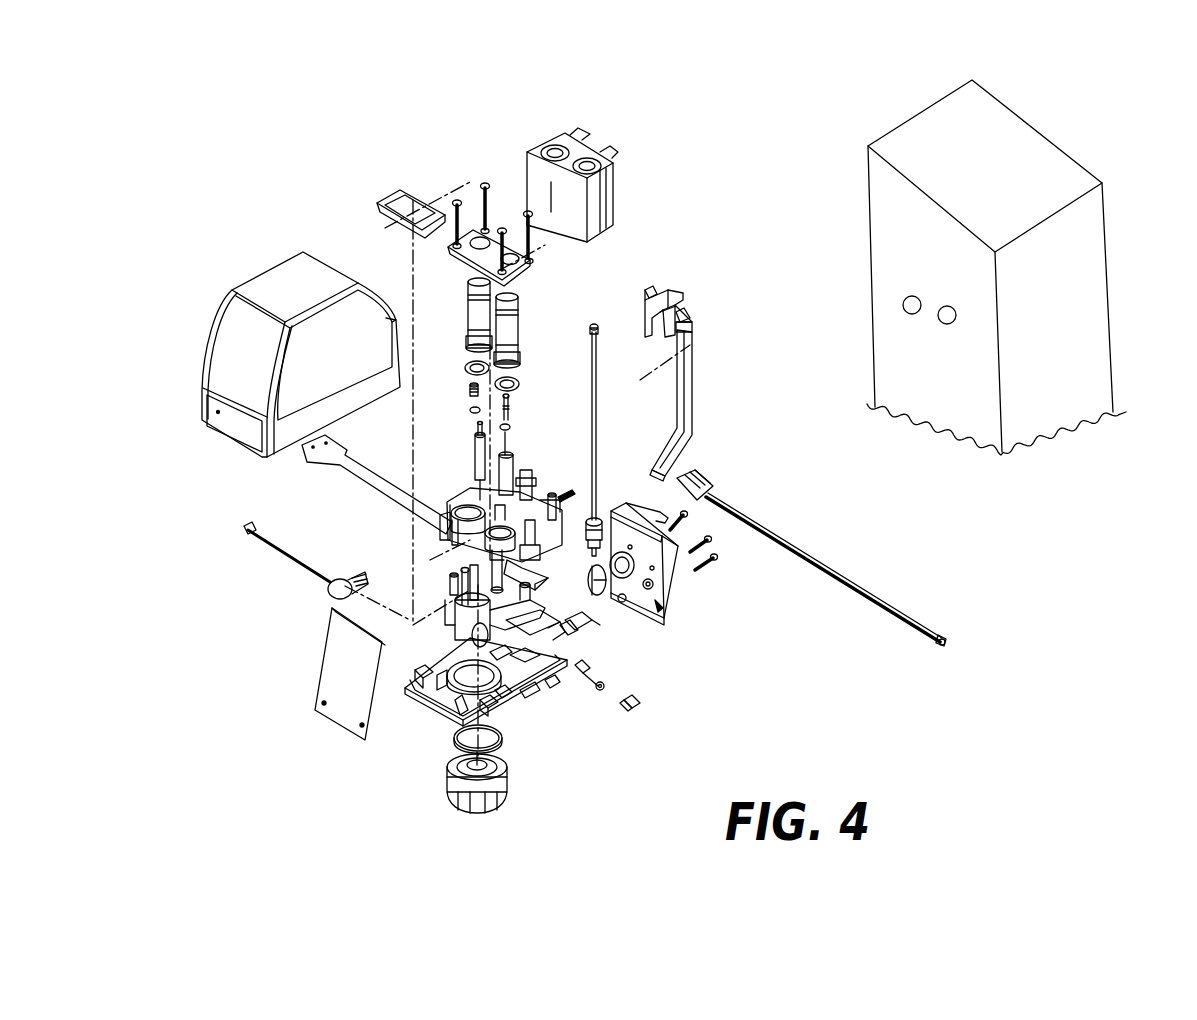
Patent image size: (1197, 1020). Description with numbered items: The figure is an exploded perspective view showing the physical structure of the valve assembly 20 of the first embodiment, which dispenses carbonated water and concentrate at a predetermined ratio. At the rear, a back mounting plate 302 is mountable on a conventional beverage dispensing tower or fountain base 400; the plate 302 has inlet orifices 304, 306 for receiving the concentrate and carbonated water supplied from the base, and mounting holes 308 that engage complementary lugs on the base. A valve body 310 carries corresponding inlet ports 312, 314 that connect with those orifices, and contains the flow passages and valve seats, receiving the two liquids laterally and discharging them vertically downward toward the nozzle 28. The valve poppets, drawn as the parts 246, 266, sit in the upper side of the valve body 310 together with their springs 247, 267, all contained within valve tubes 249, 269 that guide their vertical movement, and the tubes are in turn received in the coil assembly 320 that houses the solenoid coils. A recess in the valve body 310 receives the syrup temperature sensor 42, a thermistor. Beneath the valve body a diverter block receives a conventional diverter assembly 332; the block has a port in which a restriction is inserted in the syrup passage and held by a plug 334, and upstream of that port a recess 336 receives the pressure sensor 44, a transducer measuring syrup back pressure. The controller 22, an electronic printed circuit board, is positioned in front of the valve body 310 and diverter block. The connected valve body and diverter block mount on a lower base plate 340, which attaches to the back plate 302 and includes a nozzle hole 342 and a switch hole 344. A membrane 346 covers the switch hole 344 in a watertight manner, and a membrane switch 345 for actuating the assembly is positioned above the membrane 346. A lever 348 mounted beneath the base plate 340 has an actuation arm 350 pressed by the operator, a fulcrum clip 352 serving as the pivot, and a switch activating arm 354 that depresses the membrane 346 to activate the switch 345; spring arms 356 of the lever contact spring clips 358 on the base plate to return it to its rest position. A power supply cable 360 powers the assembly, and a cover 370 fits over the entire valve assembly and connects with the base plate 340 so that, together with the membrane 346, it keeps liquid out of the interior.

The valve assembly 20 is at (751, 249).
The controller 22 is at (318, 662).
The nozzle 28 is at (448, 779).
The syrup temperature sensor 42 is at (591, 515).
The pressure sensor 44 is at (328, 589).
The piston 246 is at (470, 458).
The spring 247 is at (467, 397).
The valve tube 249 is at (466, 322).
The valve stem 266 is at (515, 450).
The spring 267 is at (511, 404).
The valve tube 269 is at (521, 324).
The back mounting plate 302 is at (690, 590).
The inlet orifice 304 is at (666, 609).
The inlet orifice 306 is at (613, 505).
The mounting holes 308 is at (652, 523).
The valve body 310 is at (458, 506).
The inlet port 312 is at (531, 470).
The inlet port 314 is at (531, 492).
The coil assembly 320 is at (618, 185).
The diverter assembly 332 is at (597, 592).
The plug 334 is at (645, 703).
The recess 336 is at (460, 643).
The lower base plate 340 is at (443, 714).
The nozzle hole 342 is at (462, 711).
The switch hole 344 is at (512, 690).
The membrane switch 345 is at (534, 566).
The membrane 346 is at (503, 699).
The lever 348 is at (692, 396).
The actuation arm 350 is at (678, 449).
The fulcrum clip 352 is at (682, 311).
The switch activating arm 354 is at (675, 297).
The spring arms 356 is at (683, 322).
The spring clips 358 is at (597, 630).
The power supply cable 360 is at (805, 552).
The cover 370 is at (212, 321).
The fountain base 400 is at (1105, 200).